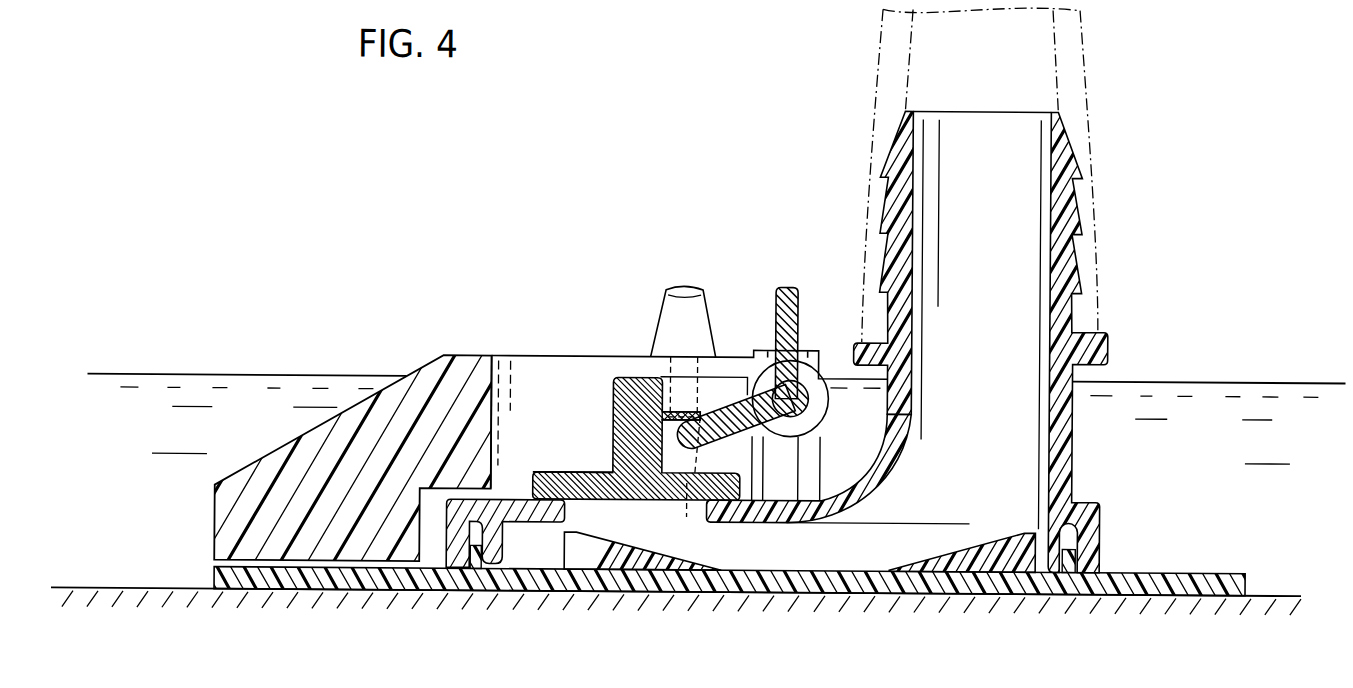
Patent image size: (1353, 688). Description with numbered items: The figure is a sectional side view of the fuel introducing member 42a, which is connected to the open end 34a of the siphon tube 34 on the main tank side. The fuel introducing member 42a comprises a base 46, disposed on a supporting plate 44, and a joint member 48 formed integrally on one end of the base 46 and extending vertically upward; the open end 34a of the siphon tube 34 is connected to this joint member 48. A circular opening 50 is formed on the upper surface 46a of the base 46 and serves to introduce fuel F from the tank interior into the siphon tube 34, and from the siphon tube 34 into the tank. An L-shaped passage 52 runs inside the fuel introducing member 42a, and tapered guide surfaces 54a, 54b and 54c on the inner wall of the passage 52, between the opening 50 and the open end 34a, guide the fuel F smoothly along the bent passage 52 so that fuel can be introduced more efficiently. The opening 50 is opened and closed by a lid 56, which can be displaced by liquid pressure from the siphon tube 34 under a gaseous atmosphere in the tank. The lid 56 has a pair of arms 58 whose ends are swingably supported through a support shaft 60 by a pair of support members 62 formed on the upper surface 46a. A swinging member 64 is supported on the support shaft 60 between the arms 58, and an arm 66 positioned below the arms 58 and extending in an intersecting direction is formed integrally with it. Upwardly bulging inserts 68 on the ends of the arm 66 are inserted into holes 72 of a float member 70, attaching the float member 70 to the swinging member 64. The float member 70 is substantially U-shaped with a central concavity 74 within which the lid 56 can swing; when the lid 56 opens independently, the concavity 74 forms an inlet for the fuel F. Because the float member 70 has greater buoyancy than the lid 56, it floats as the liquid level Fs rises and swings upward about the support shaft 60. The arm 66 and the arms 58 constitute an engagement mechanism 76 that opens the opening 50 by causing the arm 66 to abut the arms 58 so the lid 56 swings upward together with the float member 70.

The siphon tube 34 is at (1089, 70).
The open end of the siphon tube 34a is at (1088, 108).
The fuel introducing member 42a is at (574, 183).
The supporting plate 44 is at (1152, 570).
The base 46 is at (441, 549).
The upper surface of the base 46a is at (503, 500).
The joint member 48 is at (1063, 318).
The circular opening 50 is at (598, 473).
The L-shaped passage 52 is at (1003, 420).
The tapered guide surface 54a is at (641, 545).
The tapered guide surface 54b is at (946, 546).
The tapered guide surface 54c is at (875, 476).
The lid 56 is at (580, 471).
The arms 58 is at (708, 388).
The support shaft 60 is at (802, 396).
The support members 62 is at (777, 460).
The swinging member 64 is at (748, 397).
The arm 66 is at (670, 440).
The inserts 68 is at (681, 300).
The float member 70 is at (444, 398).
The holes 72 is at (685, 509).
The concavity 74 is at (492, 377).
The engagement mechanism 76 is at (610, 304).
The fuel F is at (192, 398).
The liquid level Fs is at (272, 376).